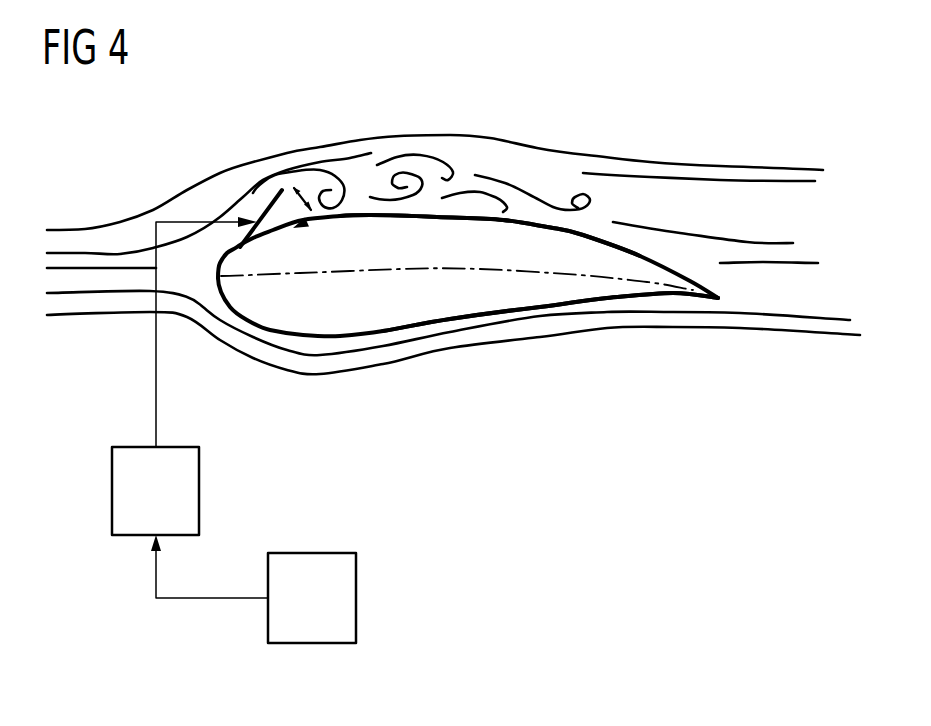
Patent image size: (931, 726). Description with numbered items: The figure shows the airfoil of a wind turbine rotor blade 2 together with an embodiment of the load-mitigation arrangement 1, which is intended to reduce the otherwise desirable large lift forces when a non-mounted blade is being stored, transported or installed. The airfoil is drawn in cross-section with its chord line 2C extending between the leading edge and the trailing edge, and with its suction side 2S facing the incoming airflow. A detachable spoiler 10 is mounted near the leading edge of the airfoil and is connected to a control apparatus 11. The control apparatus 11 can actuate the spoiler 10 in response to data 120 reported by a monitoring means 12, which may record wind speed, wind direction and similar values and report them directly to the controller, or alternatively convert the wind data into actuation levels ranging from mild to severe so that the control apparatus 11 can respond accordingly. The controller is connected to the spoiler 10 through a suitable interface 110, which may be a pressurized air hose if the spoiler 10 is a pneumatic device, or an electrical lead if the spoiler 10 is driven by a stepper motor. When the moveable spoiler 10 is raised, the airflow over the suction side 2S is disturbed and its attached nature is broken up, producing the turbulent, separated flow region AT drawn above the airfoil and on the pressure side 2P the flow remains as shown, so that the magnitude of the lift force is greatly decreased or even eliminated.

The load-mitigation arrangement 1 is at (106, 173).
The rotor blade 2 is at (380, 332).
The suction side 2S is at (590, 217).
The pressure side surface 2P is at (507, 296).
The chord line 2C is at (587, 278).
The spoiler 10 is at (267, 206).
The control apparatus 11 is at (175, 447).
The monitoring means 12 is at (312, 553).
The pressurized air hose or electrical lead 110 is at (156, 357).
The data 120 is at (220, 597).
The turbulent flow region AT is at (488, 147).